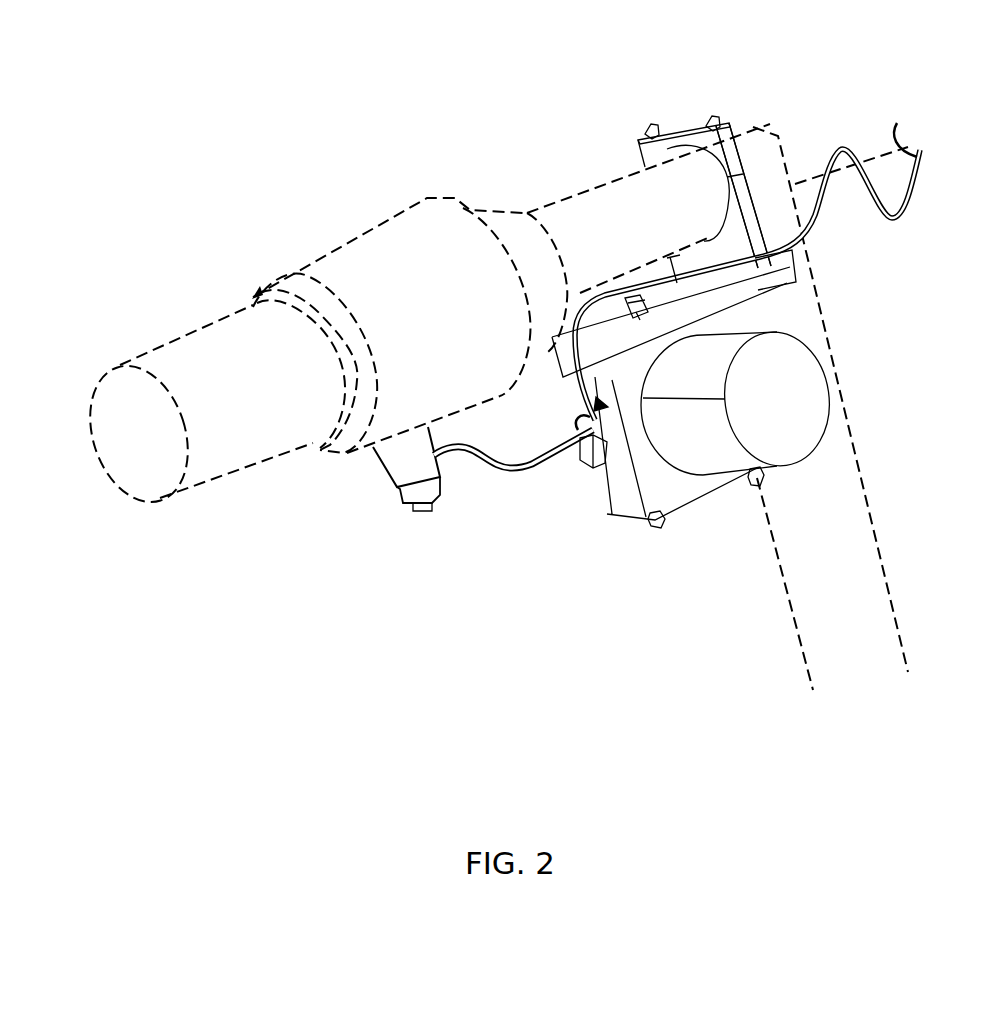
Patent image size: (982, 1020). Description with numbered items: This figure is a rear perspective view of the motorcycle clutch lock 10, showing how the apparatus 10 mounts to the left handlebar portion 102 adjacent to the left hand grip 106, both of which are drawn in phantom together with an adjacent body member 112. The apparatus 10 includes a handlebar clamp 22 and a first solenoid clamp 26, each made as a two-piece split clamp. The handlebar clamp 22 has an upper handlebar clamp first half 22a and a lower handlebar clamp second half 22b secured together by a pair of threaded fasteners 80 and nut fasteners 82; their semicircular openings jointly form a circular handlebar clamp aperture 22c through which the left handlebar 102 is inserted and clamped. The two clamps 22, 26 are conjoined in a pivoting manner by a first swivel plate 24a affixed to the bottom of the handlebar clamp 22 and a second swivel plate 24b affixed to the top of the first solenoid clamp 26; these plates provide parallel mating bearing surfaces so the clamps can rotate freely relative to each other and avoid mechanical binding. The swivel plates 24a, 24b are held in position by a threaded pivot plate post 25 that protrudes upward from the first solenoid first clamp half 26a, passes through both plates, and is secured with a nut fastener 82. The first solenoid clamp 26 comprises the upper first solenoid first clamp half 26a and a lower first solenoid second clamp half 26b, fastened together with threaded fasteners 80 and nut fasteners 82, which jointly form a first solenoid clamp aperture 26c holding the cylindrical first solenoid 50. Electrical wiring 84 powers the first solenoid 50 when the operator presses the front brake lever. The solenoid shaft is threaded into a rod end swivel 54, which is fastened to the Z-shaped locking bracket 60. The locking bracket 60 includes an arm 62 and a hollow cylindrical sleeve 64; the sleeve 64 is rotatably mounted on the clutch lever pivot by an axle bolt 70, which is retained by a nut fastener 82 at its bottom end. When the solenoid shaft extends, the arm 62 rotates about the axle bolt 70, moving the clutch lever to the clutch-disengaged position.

The motorcycle clutch lock 10 is at (548, 518).
The handlebar clamp 22 is at (741, 120).
The upper handlebar clamp first half 22a is at (742, 162).
The lower handlebar clamp second half 22b is at (762, 222).
The handlebar clamp aperture 22c is at (712, 168).
The first swivel plate 24a is at (793, 273).
The second swivel plate 24b is at (673, 340).
The pivot plate post 25 is at (622, 330).
The first solenoid clamp 26 is at (708, 360).
The first solenoid first clamp half 26a is at (722, 350).
The first solenoid second clamp half 26b is at (672, 489).
The first solenoid clamp aperture 26c is at (725, 399).
The first solenoid 50 is at (795, 402).
The rod end swivel 54 is at (587, 470).
The locking bracket 60 is at (520, 496).
The arm 62 is at (548, 453).
The hollow cylindrical sleeve 64 is at (377, 467).
The axle bolt 70 is at (420, 508).
The threaded fastener 80 is at (710, 122).
The nut fastener 82 is at (410, 492).
The electrical wiring 84 is at (620, 292).
The left handlebar portion 102 is at (603, 185).
The left hand grip 106 is at (187, 370).
The vehicle body member 112 is at (877, 153).